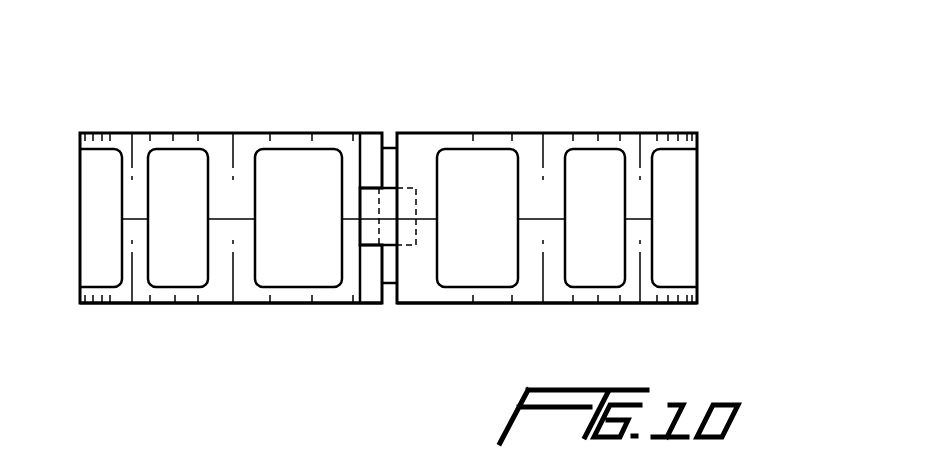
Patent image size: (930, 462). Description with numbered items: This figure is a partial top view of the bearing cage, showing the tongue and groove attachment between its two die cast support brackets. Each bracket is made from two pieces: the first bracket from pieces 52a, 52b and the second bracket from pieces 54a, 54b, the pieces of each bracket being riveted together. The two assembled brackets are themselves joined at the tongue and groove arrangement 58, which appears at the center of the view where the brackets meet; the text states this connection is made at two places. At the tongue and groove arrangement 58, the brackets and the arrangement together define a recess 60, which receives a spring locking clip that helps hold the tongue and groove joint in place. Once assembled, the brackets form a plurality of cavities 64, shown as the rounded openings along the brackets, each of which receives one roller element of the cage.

The support bracket piece 52a is at (140, 131).
The support bracket piece 52b is at (228, 305).
The support bracket piece 54a is at (580, 131).
The support bracket piece 54b is at (677, 303).
The tongue and groove arrangement 58 is at (387, 236).
The recess 60 is at (392, 132).
The cavity 64 is at (273, 160).